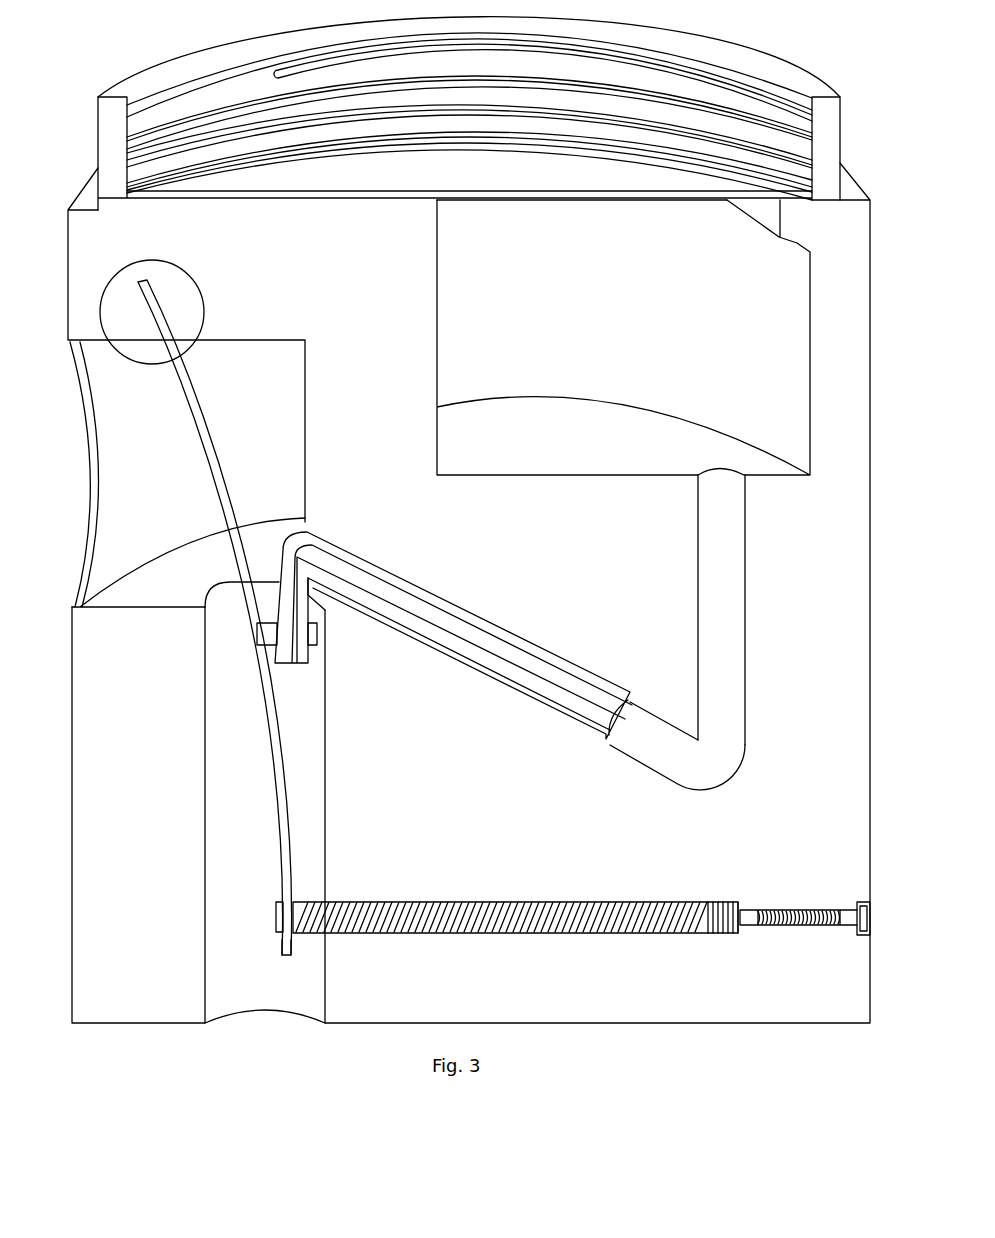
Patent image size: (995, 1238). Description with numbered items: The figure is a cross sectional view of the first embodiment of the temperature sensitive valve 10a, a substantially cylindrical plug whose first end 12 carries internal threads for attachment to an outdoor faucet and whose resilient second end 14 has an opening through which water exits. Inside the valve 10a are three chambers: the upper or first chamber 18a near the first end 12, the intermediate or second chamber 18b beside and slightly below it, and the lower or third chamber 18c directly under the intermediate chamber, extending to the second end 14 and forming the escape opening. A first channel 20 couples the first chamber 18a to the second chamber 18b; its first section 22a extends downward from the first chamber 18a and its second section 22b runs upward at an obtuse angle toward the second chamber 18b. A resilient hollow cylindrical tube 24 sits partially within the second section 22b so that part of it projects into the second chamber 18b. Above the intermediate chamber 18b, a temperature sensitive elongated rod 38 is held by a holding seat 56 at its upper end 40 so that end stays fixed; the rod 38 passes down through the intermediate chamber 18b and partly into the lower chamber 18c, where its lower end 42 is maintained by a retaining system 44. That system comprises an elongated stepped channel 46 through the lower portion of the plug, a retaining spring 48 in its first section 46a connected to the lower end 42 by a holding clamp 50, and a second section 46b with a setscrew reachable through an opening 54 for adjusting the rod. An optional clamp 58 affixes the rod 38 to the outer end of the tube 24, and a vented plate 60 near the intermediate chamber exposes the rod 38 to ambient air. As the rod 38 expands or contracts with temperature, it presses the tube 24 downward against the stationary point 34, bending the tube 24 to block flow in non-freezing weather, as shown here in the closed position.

The temperature sensitive valve (first embodiment) 10a is at (113, 65).
The first end 12 is at (148, 160).
The second end 14 is at (768, 995).
The first chamber 18a is at (747, 356).
The second chamber 18b is at (163, 493).
The third chamber 18c is at (308, 755).
The first channel 20 is at (707, 632).
The first section 22a is at (730, 595).
The second section 22b is at (668, 757).
The hollow cylindrical tube 24 is at (510, 647).
The stationary point 34 is at (312, 585).
The elongated rod 38 is at (245, 608).
The upper end 40 is at (135, 293).
The lower end 42 is at (287, 957).
The retaining system 44 is at (575, 880).
The elongated stepped channel 46 is at (575, 917).
The first section of stepped channel 46a is at (515, 917).
The second section of stepped channel 46b is at (798, 894).
The retaining spring 48 is at (473, 903).
The holding clamp 50 is at (277, 920).
The opening 54 is at (870, 908).
The holding seat 56 is at (203, 297).
The clamp 58 is at (253, 642).
The plate 60 is at (88, 423).